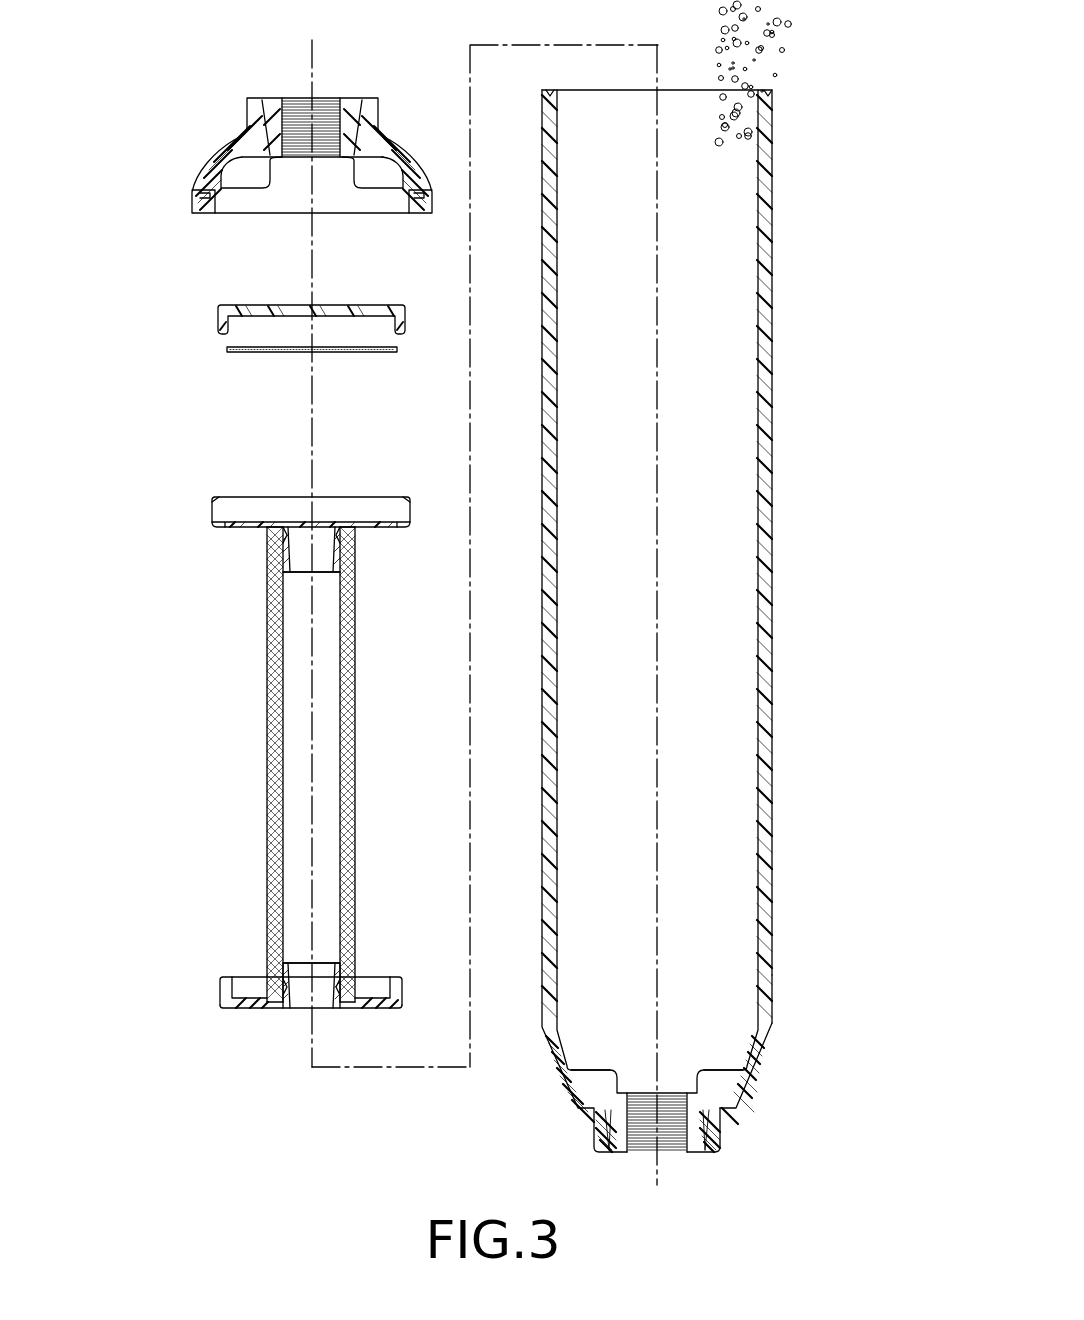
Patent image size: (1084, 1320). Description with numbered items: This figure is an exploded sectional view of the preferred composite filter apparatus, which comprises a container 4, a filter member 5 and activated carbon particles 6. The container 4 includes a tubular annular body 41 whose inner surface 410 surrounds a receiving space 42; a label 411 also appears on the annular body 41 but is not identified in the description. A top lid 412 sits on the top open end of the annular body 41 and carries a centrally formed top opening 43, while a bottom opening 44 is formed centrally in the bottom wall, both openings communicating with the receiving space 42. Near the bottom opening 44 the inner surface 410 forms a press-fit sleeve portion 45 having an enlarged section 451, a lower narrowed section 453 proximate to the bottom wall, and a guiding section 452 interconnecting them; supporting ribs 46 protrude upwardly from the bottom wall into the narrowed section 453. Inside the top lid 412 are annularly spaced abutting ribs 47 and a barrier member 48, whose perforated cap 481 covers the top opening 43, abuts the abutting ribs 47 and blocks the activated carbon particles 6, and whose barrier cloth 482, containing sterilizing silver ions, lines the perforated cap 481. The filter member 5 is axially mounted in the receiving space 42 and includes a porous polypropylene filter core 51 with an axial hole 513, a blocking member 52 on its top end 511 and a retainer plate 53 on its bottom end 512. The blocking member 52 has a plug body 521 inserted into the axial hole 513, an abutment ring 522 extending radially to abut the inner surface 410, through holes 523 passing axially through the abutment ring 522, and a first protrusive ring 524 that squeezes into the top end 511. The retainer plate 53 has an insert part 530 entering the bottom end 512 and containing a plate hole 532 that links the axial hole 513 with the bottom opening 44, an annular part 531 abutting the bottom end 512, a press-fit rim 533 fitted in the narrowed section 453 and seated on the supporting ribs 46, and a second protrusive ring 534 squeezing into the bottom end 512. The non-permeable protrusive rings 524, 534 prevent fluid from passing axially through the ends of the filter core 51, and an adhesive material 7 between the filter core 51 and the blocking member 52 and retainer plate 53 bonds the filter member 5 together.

The container 4 is at (507, 616).
The annular body 41 is at (729, 615).
The inner surface 410 is at (760, 512).
The wall section 411 is at (765, 568).
The top cap 412 is at (265, 139).
The receiving space 42 is at (738, 628).
The top opening 43 is at (296, 108).
The bottom opening 44 is at (690, 1134).
The press-fit sleeve portion 45 is at (701, 1070).
The enlarged section 451 is at (766, 982).
The guiding section 452 is at (752, 1022).
The narrowed section 453 is at (745, 1066).
The supporting ribs 46 is at (590, 1090).
The abutting ribs 47 is at (372, 175).
The barrier member 48 is at (247, 322).
The perforated cap 481 is at (222, 314).
The barrier cloth 482 is at (240, 350).
The filter member 5 is at (261, 787).
The filter core 51 is at (246, 767).
The top end 511 is at (296, 520).
The bottom end 512 is at (270, 1003).
The axial hole 513 is at (298, 762).
The blocking member 52 is at (246, 509).
The plug body 521 is at (318, 562).
The abutment ring 522 is at (216, 500).
The through holes 523 is at (250, 528).
The first protrusive ring 524 is at (268, 560).
The retainer plate 53 is at (246, 1041).
The insert part 530 is at (326, 986).
The annular part 531 is at (236, 1010).
The plate hole 532 is at (300, 987).
The press-fit rim 533 is at (228, 985).
The second protrusive ring 534 is at (275, 966).
The activated carbon particles 6 is at (792, 24).
The adhesive material 7 is at (352, 535).